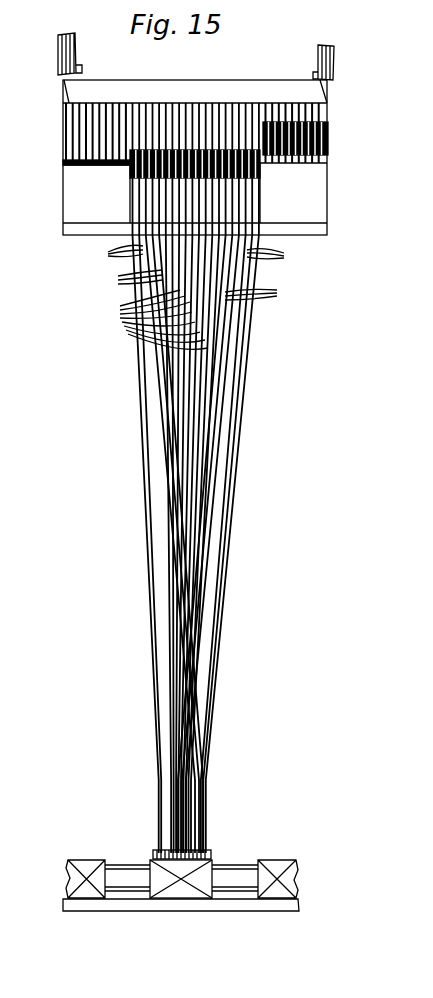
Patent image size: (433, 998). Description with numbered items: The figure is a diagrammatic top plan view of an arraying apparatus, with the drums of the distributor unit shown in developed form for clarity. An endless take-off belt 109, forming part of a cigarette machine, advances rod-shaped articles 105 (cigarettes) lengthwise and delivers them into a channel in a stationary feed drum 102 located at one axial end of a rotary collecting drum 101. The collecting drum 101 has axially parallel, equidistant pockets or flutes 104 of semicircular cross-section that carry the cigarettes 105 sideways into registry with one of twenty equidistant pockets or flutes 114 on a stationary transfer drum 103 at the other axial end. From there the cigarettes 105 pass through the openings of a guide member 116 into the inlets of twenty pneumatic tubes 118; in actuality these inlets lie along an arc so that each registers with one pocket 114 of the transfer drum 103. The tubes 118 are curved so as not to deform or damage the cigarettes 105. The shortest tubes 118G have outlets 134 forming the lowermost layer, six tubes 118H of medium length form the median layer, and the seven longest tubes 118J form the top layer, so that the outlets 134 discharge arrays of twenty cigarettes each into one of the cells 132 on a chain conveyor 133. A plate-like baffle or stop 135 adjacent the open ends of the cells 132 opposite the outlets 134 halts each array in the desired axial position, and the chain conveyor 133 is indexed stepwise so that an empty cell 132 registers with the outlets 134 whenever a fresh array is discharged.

The rotary collecting member or drum 101 is at (305, 104).
The stationary feed drum 102 is at (258, 90).
The stationary transfer member or drum 103 is at (293, 193).
The pockets or flutes 104 is at (80, 125).
The rod-shaped articles 105 is at (130, 170).
The endless take-off belt 109 is at (72, 51).
The peripheral pockets or flutes 114 is at (130, 198).
The guide member 116 is at (130, 226).
The pneumatic tubes 118 is at (117, 400).
The shortest tubes 118G is at (145, 319).
The tubes of medium length 118H is at (201, 288).
The longest tubes 118J is at (190, 254).
The cells 132 is at (155, 862).
The chain conveyor 133 is at (240, 852).
The outlets 134 is at (156, 852).
The plate-like baffle or stop 135 is at (165, 905).